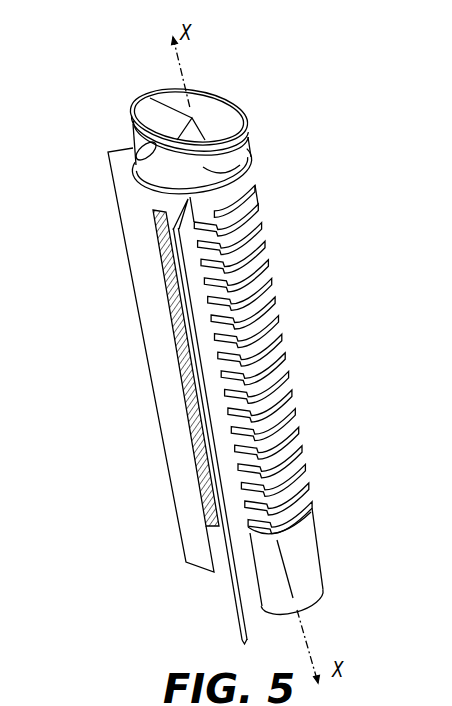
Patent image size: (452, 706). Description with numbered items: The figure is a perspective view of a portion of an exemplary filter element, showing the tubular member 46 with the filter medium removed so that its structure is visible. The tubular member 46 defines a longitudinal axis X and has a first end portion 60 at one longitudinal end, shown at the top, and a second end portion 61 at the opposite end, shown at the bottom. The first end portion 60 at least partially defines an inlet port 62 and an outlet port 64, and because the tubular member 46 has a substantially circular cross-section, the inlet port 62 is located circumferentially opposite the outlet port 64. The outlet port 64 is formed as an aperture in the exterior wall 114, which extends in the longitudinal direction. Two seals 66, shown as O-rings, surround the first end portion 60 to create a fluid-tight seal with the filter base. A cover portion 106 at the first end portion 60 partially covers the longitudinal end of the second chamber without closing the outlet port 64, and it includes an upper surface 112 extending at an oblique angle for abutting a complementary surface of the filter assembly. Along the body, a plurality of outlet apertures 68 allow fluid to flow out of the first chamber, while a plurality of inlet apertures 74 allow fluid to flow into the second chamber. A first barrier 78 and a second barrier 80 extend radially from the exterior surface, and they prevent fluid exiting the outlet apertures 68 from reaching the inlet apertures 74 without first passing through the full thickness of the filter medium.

The tubular member 46 is at (209, 62).
The first end portion 60 is at (228, 78).
The second end portion 61 is at (325, 609).
The inlet port 62 is at (218, 128).
The outlet port 64 is at (140, 143).
The seals 66 is at (130, 107).
The outlet apertures 68 is at (260, 230).
The inlet apertures 74 is at (160, 280).
The first barrier 78 is at (238, 627).
The second barrier 80 is at (118, 192).
The cover portion 106 is at (138, 107).
The upper surface 112 is at (167, 108).
The exterior wall 114 is at (203, 167).